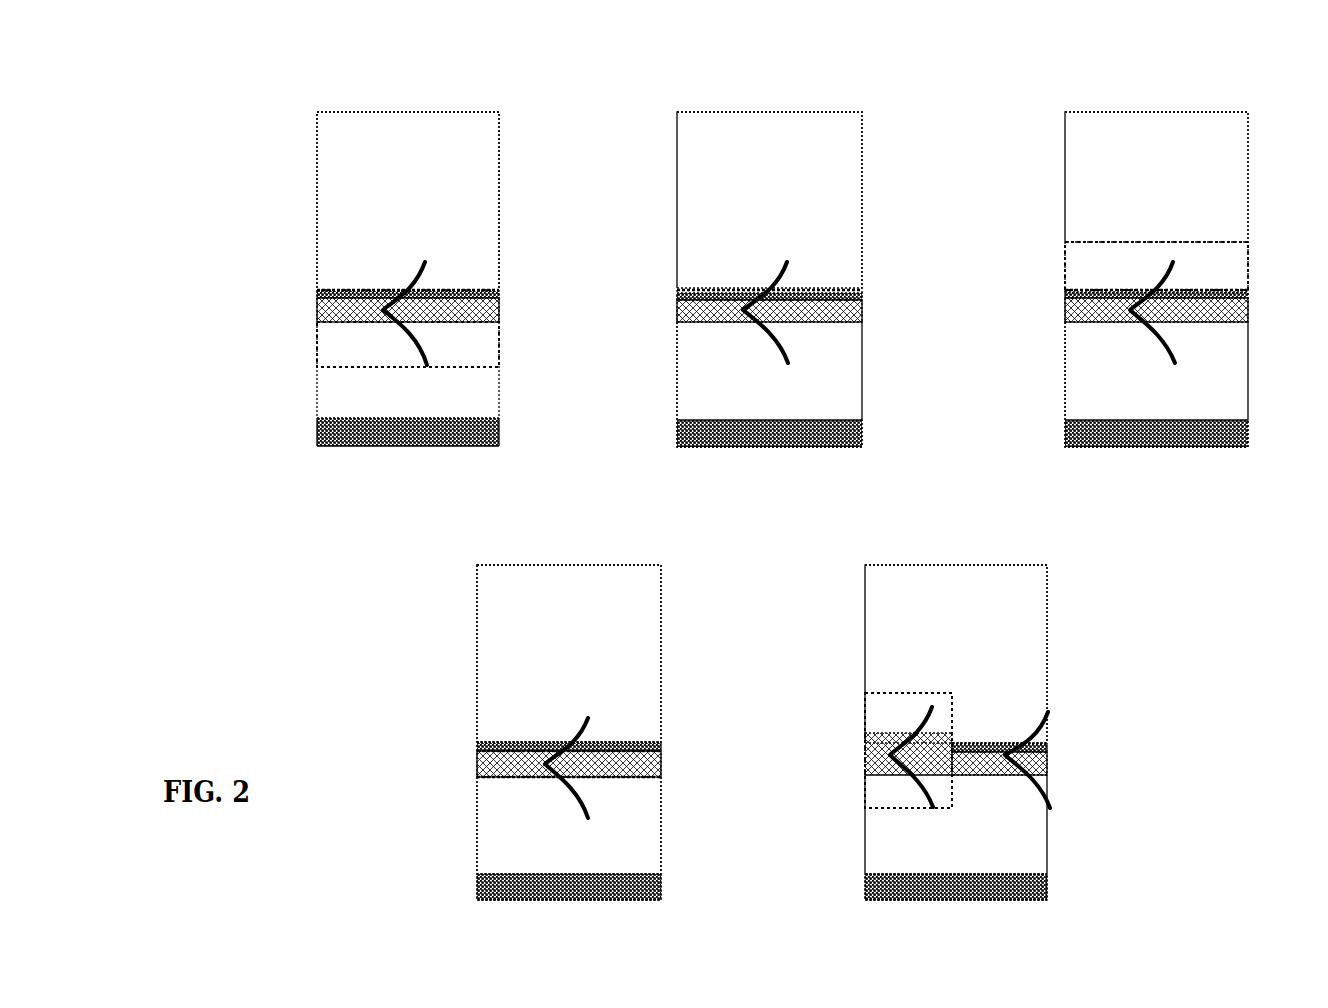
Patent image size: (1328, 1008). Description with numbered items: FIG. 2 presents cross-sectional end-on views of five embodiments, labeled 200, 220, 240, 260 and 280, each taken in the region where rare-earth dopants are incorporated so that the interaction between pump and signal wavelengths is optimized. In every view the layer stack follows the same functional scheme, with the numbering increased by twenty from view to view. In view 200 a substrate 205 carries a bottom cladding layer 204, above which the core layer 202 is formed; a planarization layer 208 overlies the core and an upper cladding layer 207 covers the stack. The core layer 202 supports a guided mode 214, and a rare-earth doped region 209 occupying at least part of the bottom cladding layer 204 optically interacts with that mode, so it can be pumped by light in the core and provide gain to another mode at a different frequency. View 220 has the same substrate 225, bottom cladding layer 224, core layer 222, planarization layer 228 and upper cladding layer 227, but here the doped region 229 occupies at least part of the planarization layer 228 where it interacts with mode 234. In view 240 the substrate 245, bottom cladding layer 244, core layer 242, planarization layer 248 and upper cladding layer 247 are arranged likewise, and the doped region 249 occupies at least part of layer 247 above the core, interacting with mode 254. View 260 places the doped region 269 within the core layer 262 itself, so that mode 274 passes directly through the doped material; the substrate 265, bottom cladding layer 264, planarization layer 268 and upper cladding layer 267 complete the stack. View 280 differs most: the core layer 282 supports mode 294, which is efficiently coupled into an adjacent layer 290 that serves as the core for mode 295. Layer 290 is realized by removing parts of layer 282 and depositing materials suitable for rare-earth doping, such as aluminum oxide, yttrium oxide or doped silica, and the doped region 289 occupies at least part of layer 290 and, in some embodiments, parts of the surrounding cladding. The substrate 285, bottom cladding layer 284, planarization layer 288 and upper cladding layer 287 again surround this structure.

The cross-sectional end-on view 200 is at (296, 62).
The upper cladding layer 207 is at (317, 205).
The planarization layer 208 is at (317, 288).
The core layer 202 is at (317, 308).
The rare-earth doped region 209 is at (317, 330).
The bottom cladding layer 204 is at (317, 385).
The substrate 205 is at (317, 433).
The optical mode 214 is at (415, 337).
The cross-sectional end-on view 220 is at (676, 62).
The upper cladding layer 227 is at (677, 205).
The planarization layer 228 is at (736, 290).
The rare-earth doped region 229 is at (677, 297).
The core layer 222 is at (677, 312).
The bottom cladding layer 224 is at (677, 385).
The substrate 225 is at (677, 433).
The optical mode 234 is at (783, 337).
The cross-sectional end-on view 240 is at (1051, 62).
The upper cladding layer 247 is at (1065, 205).
The rare-earth doped region 249 is at (1082, 242).
The planarization layer 248 is at (1065, 292).
The core layer 242 is at (1065, 312).
The bottom cladding layer 244 is at (1065, 385).
The substrate 245 is at (1065, 433).
The optical mode 254 is at (1165, 337).
The cross-sectional end-on view 260 is at (458, 515).
The upper cladding layer 267 is at (477, 658).
The planarization layer 268 is at (477, 740).
The core layer 262 is at (477, 752).
The rare-earth doped region 269 is at (477, 769).
The bottom cladding layer 264 is at (477, 840).
The substrate 265 is at (477, 888).
The optical mode 274 is at (586, 792).
The cross-sectional end-on view 280 is at (858, 515).
The upper cladding layer 287 is at (865, 660).
The rare-earth doped region 289 is at (865, 713).
The doped core layer 290 is at (865, 752).
The planarization layer 288 is at (1000, 745).
The core layer 282 is at (1048, 765).
The bottom cladding layer 284 is at (865, 840).
The substrate 285 is at (865, 890).
The optical mode 294 is at (1040, 790).
The optical mode 295 is at (935, 790).